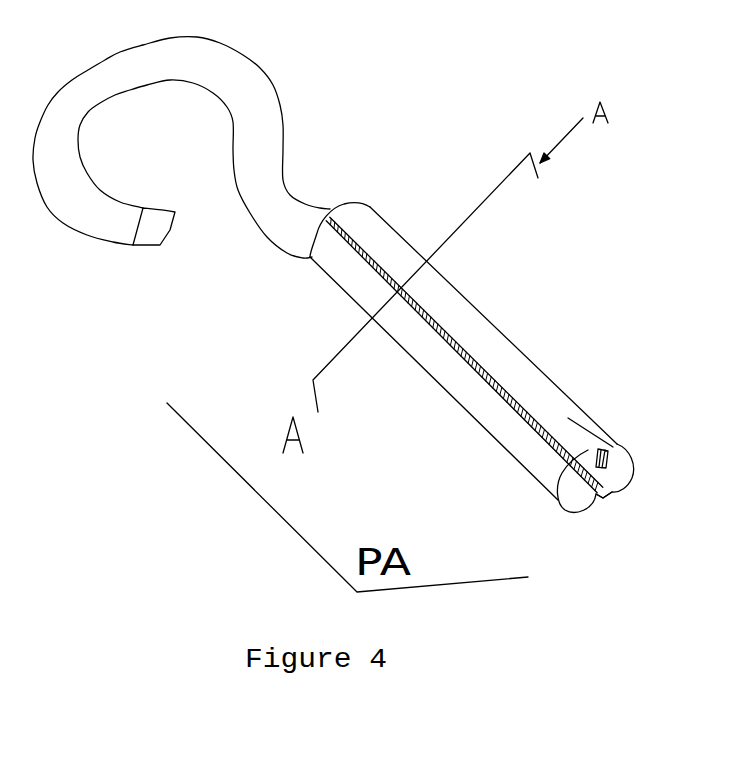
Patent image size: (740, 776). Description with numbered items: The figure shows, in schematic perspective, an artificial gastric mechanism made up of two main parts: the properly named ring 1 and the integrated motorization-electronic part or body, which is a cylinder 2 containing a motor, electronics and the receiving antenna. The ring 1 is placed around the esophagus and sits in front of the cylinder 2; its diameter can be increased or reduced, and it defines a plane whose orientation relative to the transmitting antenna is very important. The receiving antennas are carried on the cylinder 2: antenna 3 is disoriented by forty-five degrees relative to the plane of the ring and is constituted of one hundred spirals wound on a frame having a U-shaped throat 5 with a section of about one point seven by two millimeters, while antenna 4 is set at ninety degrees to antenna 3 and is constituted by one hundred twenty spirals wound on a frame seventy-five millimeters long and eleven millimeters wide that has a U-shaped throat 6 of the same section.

The ring 1 is at (40, 27).
The cylinder 2 is at (490, 297).
The antenna 3 is at (497, 400).
The antenna 4 is at (594, 423).
The U-shaped throat 5 is at (620, 494).
The U-shaped throat 6 is at (597, 505).